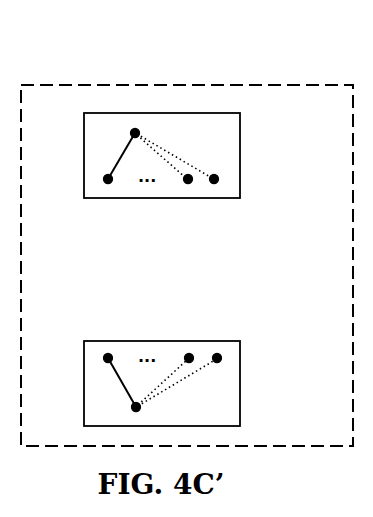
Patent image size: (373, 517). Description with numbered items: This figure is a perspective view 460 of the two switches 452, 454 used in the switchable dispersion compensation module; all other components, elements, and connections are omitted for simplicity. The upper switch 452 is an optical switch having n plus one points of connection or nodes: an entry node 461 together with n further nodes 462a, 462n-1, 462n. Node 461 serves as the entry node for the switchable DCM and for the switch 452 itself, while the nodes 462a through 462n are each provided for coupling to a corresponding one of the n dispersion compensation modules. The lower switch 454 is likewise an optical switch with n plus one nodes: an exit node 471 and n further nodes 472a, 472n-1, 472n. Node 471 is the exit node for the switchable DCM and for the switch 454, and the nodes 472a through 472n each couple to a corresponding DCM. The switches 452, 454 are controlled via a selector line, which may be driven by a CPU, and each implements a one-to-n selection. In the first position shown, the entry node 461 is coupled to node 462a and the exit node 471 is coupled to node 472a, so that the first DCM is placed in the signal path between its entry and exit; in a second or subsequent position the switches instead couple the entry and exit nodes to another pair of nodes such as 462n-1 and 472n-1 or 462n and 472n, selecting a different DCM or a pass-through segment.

The perspective view 460 is at (104, 74).
The switch 452 is at (240, 140).
The switch 454 is at (240, 400).
The entry node 461 is at (134, 133).
The node 462a is at (108, 181).
The node 462n-1 is at (188, 181).
The node 462n is at (214, 181).
The exit node 471 is at (134, 407).
The node 472a is at (108, 356).
The node 472n-1 is at (189, 356).
The node 472n is at (217, 356).